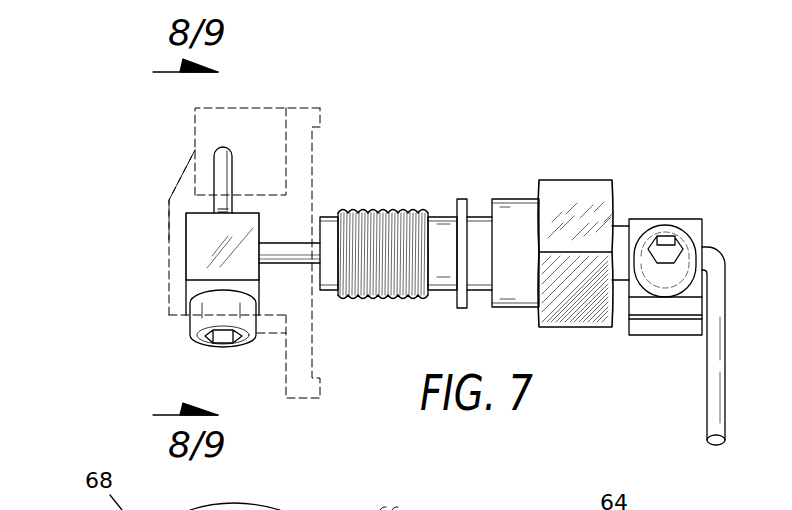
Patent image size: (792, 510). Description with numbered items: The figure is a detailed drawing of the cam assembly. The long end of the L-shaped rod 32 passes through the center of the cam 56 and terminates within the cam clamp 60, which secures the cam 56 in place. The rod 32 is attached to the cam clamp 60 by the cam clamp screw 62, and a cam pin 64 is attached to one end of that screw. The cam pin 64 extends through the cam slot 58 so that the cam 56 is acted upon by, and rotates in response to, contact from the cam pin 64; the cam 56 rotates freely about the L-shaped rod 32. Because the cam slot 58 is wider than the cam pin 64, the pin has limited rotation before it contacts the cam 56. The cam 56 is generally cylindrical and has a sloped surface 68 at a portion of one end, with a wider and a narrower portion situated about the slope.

The L-shaped rod 32 is at (286, 242).
The cam 56 is at (168, 273).
The cam slot 58 is at (258, 138).
The cam clamp 60 is at (222, 255).
The cam clamp screw 62 is at (205, 342).
The cam pin 64 is at (222, 157).
The sloped surface 68 is at (178, 182).